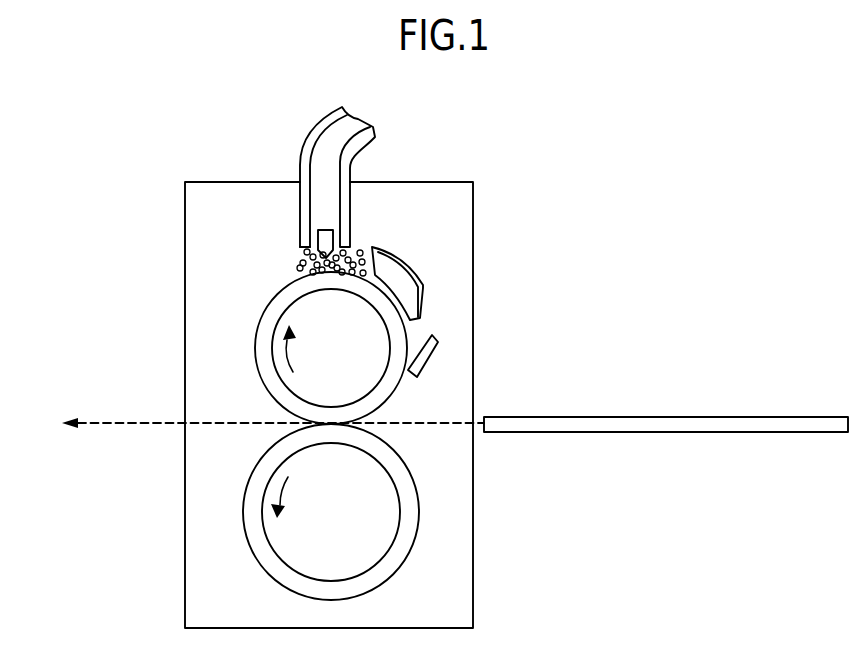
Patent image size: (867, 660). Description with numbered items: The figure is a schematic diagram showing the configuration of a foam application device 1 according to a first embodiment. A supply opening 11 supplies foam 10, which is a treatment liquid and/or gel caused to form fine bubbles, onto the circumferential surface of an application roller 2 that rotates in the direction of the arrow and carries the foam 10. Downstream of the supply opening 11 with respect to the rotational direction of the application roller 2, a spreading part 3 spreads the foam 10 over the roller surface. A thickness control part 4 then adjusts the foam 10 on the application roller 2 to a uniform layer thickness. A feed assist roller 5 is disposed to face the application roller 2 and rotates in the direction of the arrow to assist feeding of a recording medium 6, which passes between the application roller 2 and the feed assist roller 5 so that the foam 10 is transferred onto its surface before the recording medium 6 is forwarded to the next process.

The foam application device 1 is at (134, 195).
The application roller 2 is at (263, 332).
The spreading part 3 is at (413, 269).
The thickness control part 4 is at (425, 356).
The feed assist roller 5 is at (408, 522).
The recording medium 6 is at (682, 425).
The foam 10 is at (304, 251).
The supply opening 11 is at (338, 232).